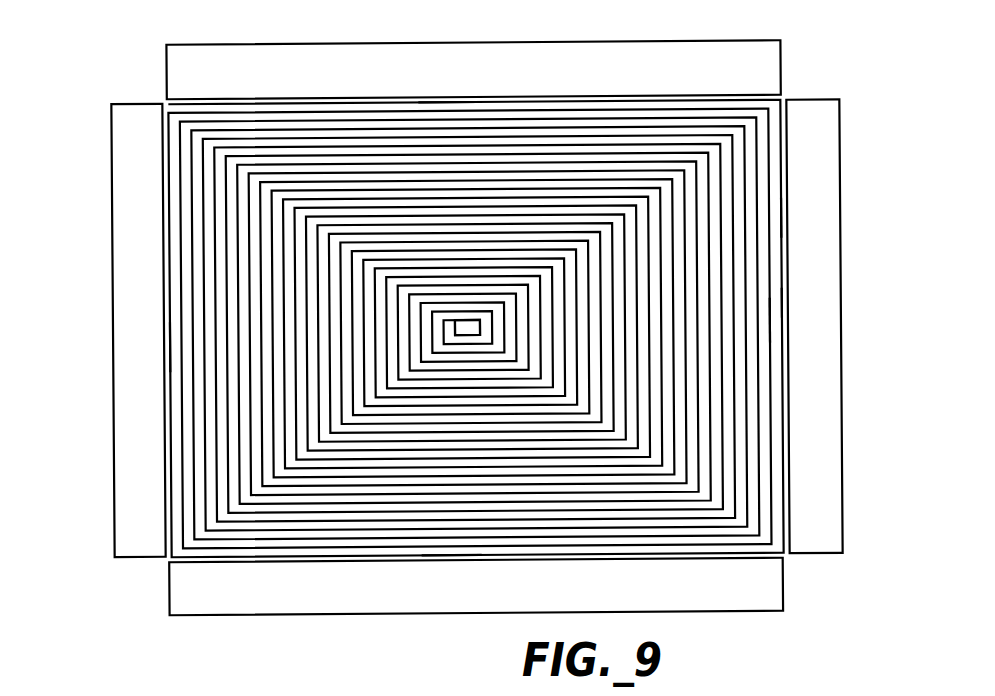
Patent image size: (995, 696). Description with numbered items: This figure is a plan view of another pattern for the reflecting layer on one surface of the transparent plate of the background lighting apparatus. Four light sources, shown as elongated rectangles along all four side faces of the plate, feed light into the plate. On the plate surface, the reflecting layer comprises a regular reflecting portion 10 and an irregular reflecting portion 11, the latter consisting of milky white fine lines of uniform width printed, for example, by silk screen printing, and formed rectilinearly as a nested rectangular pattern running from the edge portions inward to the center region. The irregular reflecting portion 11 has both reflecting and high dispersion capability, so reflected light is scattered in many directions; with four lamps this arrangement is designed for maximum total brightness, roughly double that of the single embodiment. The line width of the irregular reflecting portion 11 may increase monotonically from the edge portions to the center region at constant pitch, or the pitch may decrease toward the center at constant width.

The regular reflecting portion 10 is at (777, 219).
The irregular reflecting portion 11 is at (777, 325).